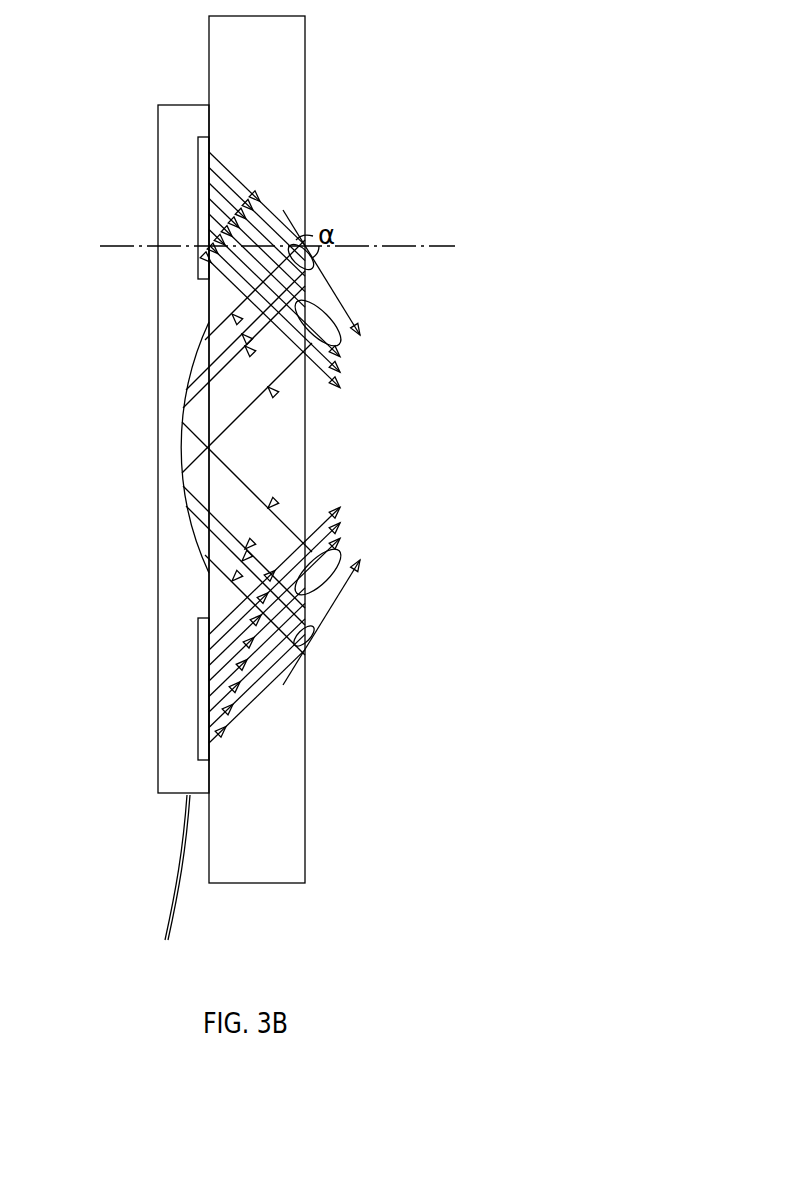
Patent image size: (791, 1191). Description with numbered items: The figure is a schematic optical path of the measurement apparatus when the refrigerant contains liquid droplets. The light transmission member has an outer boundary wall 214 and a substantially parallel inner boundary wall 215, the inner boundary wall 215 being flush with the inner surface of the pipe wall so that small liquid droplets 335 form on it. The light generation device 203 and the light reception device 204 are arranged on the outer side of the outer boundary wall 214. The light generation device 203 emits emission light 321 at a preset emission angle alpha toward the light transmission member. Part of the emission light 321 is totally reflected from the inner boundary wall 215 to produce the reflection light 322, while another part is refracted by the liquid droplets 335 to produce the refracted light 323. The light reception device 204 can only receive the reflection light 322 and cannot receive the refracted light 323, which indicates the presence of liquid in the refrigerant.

The light generation device 203 is at (202, 204).
The light reception device 204 is at (187, 448).
The outer boundary wall 214 is at (209, 60).
The inner boundary wall 215 is at (305, 60).
The emission light 321 is at (273, 210).
The reflection light 322 is at (255, 405).
The refracted light 323 is at (347, 316).
The liquid droplets 335 is at (323, 322).